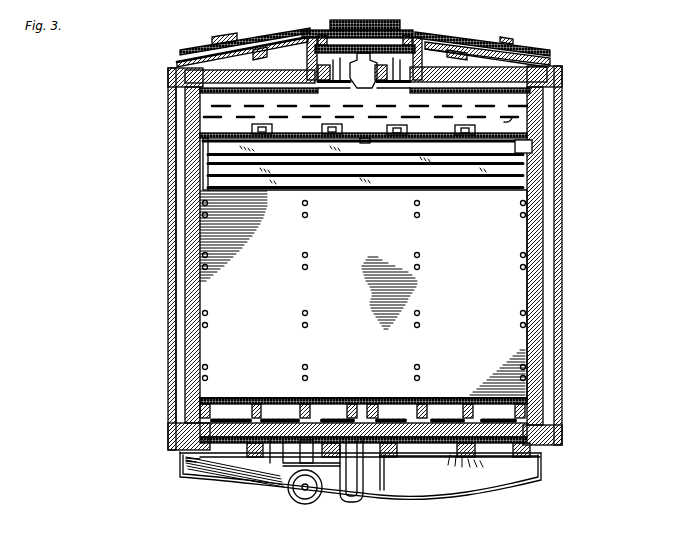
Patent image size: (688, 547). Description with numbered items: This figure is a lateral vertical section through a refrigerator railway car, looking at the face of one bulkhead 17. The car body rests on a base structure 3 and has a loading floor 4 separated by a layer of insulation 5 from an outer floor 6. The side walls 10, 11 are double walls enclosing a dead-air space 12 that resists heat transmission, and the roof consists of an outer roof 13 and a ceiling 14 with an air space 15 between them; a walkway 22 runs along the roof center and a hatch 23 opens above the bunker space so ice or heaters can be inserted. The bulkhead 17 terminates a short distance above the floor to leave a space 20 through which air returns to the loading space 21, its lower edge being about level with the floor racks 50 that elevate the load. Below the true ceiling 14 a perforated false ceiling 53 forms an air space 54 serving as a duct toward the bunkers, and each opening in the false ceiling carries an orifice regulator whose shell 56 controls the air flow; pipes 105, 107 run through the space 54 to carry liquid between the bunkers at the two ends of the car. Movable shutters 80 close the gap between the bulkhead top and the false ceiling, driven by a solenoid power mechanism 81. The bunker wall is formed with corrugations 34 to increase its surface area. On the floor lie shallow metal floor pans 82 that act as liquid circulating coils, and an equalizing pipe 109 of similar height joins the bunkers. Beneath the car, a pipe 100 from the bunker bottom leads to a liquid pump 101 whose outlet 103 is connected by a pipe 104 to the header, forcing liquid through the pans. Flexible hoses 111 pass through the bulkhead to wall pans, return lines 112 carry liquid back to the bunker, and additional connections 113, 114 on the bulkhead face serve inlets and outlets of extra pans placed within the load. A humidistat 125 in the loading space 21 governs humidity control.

The base structure 3 is at (435, 492).
The loading floor 4 is at (484, 441).
The insulation 5 is at (502, 437).
The outer floor 6 is at (447, 440).
The side wall 10 is at (165, 293).
The side wall 11 is at (562, 379).
The dead-air space 12 is at (548, 348).
The outer roof 13 is at (428, 43).
The ceiling 14 is at (482, 73).
The air space 15 is at (457, 65).
The bulkhead 17 is at (508, 297).
The space below bulkhead 20 is at (442, 398).
The loading space 21 is at (505, 249).
The walkway 22 is at (386, 28).
The hatch 23 is at (250, 36).
The corrugations 34 is at (512, 47).
The floor rack 50 is at (237, 400).
The false ceiling 53 is at (418, 136).
The air space 54 is at (298, 122).
The shell 56 is at (342, 132).
The shutter 80 is at (479, 168).
The power mechanism 81 is at (365, 143).
The floor pan 82 is at (379, 418).
The pipe 100 is at (285, 467).
The liquid pump 101 is at (303, 497).
The pump outlet 103 is at (324, 502).
The pipe 104 is at (362, 475).
The pipe 105 is at (490, 107).
The pipe 107 is at (502, 125).
The equalizing pipe 109 is at (311, 418).
The flexible hose 111 is at (520, 314).
The return line 112 is at (520, 327).
The hose connection 113 is at (308, 216).
The hose connection 114 is at (308, 204).
The humidistat 125 is at (540, 144).